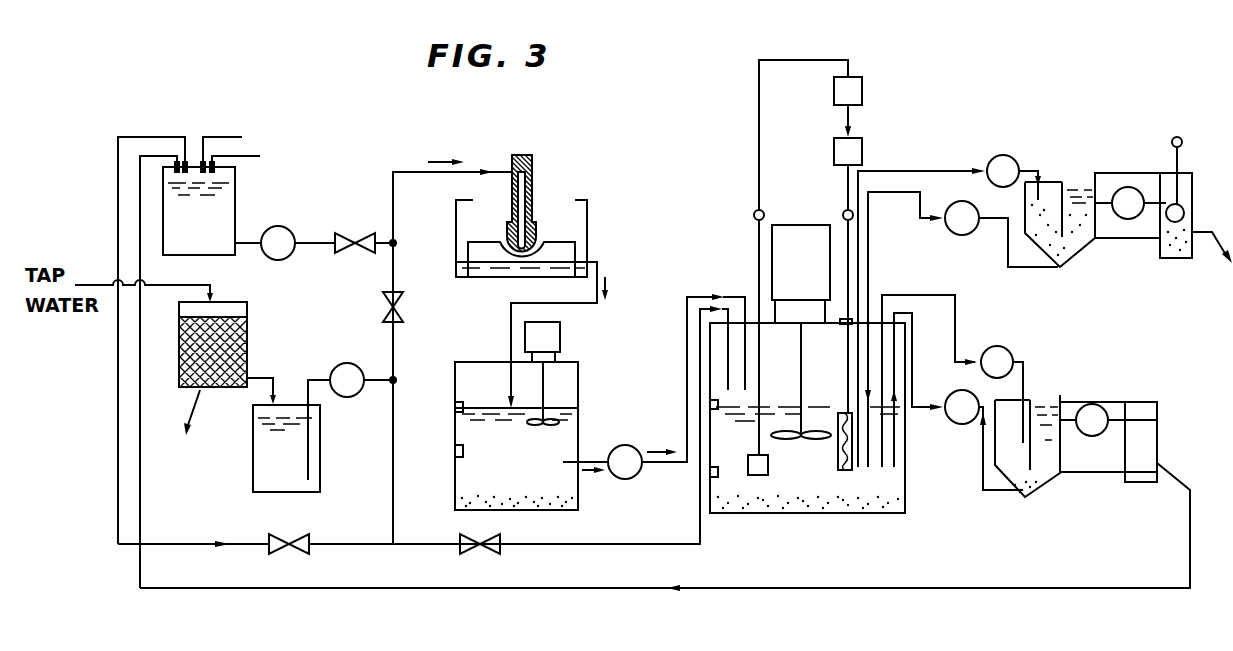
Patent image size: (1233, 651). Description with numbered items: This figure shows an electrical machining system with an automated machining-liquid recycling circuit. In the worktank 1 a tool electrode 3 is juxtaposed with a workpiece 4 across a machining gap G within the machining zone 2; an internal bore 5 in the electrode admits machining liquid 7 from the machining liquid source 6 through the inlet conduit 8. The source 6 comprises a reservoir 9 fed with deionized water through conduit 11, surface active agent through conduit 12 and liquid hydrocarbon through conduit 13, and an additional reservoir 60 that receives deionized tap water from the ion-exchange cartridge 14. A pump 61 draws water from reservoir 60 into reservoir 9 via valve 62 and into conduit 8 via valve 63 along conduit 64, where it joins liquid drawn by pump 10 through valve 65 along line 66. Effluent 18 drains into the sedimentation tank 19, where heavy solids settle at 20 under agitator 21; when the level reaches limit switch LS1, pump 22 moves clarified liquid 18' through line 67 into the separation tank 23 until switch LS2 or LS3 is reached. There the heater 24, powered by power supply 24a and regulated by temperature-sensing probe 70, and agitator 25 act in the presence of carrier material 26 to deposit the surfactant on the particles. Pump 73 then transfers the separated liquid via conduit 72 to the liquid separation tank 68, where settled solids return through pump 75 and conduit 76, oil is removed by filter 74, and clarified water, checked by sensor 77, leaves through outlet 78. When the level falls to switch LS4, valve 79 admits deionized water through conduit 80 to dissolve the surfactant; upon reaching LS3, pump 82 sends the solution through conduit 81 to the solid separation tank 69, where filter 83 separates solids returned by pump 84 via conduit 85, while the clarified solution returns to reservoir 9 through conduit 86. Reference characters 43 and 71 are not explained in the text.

The worktank 1 is at (587, 215).
The machining zone 2 is at (538, 246).
The tool electrode 3 is at (532, 160).
The workpiece 4 is at (517, 268).
The internal bore 5 is at (527, 189).
The machining liquid source 6 is at (349, 178).
The machining liquid 7 is at (436, 161).
The inlet conduit 8 is at (393, 172).
The reservoir 9 is at (235, 190).
The pump 10 is at (280, 227).
The conduit 11 is at (155, 137).
The conduit 12 is at (242, 137).
The conduit 13 is at (260, 156).
The ion-exchange cartridge 14 is at (247, 338).
The machining liquid effluent 18 is at (626, 286).
The clarified liquid 18' is at (602, 488).
The sedimentation tank 19 is at (455, 382).
The settled solid components 20 is at (515, 510).
The agitator 21 is at (560, 335).
The pump 22 is at (595, 455).
The separation tank 23 is at (905, 487).
The heater 24 is at (843, 418).
The power supply 24a is at (834, 146).
The agitator 25 is at (797, 225).
The carrier material 26 is at (835, 508).
The temperature sensor line 43 is at (759, 245).
The additional reservoir 60 is at (320, 456).
The pump 61 is at (348, 352).
The valve 62 is at (289, 556).
The valve 63 is at (399, 314).
The conduit 64 is at (393, 262).
The valve 65 is at (355, 236).
The line 66 is at (310, 245).
The line 67 is at (687, 303).
The liquid separation tank 68 is at (1073, 253).
The solid separation tank 69 is at (1043, 490).
The temperature-sensing probe 70 is at (759, 343).
The temperature controller 71 is at (848, 77).
The conduit 72 is at (928, 171).
The pump 73 is at (1012, 159).
The filter 74 is at (1118, 173).
The pump 75 is at (977, 200).
The conduit 76 is at (934, 216).
The sensor 77 is at (1184, 213).
The outlet 78 is at (1205, 250).
The valve 79 is at (486, 555).
The conduit 80 is at (580, 546).
The conduit 81 is at (940, 295).
The pump 82 is at (1008, 351).
The filter 83 is at (1097, 472).
The pump 84 is at (948, 395).
The conduit 85 is at (990, 492).
The conduit 86 is at (955, 588).
The upper limit switch LS1 is at (455, 406).
The limit switch LS2 is at (455, 451).
The limit switch LS3 is at (710, 404).
The limit switch LS4 is at (710, 472).
The machining gap G is at (528, 253).